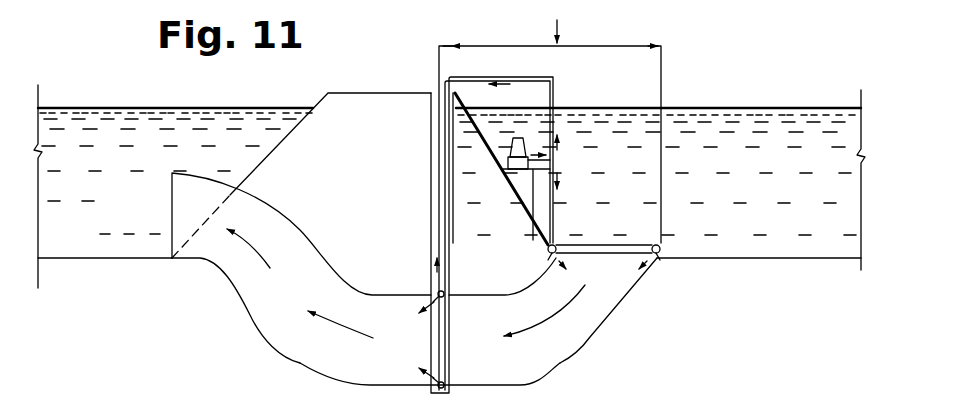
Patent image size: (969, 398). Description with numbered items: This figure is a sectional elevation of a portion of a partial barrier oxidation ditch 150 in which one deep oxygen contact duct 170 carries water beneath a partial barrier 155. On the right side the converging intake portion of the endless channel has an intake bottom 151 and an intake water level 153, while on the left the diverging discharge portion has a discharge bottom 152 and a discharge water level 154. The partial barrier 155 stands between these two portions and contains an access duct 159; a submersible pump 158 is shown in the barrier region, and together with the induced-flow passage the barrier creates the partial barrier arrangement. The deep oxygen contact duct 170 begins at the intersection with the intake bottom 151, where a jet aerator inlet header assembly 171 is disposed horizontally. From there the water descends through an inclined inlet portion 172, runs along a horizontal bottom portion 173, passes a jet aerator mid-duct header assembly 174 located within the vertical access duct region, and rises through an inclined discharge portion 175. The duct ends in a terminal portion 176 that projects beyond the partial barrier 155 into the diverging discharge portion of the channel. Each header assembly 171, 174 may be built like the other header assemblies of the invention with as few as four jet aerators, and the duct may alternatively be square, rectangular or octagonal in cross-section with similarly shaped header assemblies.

The oxidation ditch 150 is at (743, 61).
The intake bottom 151 is at (759, 257).
The discharge bottom 152 is at (95, 257).
The intake water level 153 is at (773, 107).
The discharge water level 154 is at (137, 107).
The partial barrier 155 is at (384, 92).
The submersible pump 158 is at (512, 140).
The access duct 159 is at (431, 185).
The deep oxygen contact duct 170 is at (611, 369).
The jet aerator inlet header assembly 171 is at (659, 241).
The inclined inlet portion 172 is at (597, 337).
The horizontal bottom portion 173 is at (493, 378).
The jet aerator mid-duct header assembly 174 is at (431, 353).
The inclined discharge portion 175 is at (270, 338).
The terminal portion 176 is at (172, 212).